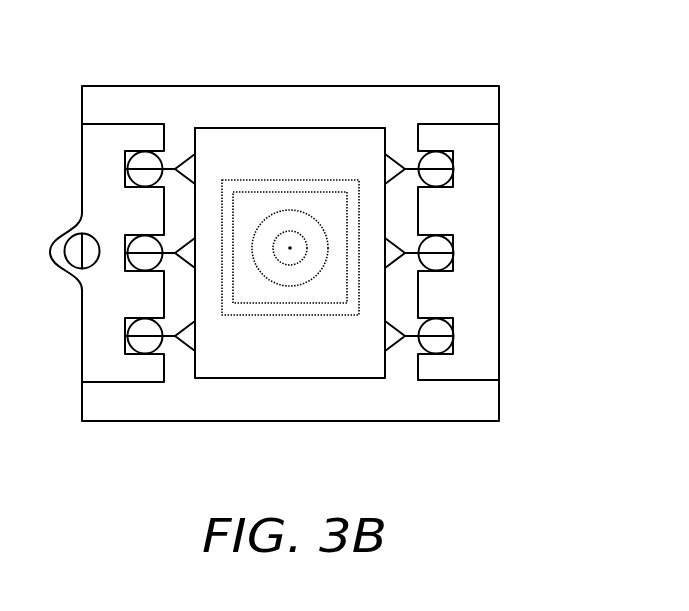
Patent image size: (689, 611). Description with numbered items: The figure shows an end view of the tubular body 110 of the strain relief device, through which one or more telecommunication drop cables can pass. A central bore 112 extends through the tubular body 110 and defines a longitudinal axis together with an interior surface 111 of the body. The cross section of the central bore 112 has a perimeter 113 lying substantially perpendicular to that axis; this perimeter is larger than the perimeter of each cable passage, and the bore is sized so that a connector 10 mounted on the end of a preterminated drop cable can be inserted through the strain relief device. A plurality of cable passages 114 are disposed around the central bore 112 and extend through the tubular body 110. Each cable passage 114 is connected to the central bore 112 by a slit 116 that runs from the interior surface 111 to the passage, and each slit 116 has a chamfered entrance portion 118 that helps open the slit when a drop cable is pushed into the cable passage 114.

The connector 10 is at (353, 209).
The tubular body 110 is at (451, 422).
The interior surface 111 is at (195, 298).
The central bore 112 is at (222, 140).
The perimeter 113 is at (323, 128).
The cable passage 114 is at (439, 323).
The slit 116 is at (413, 163).
The chamfered entrance portion 118 is at (397, 163).